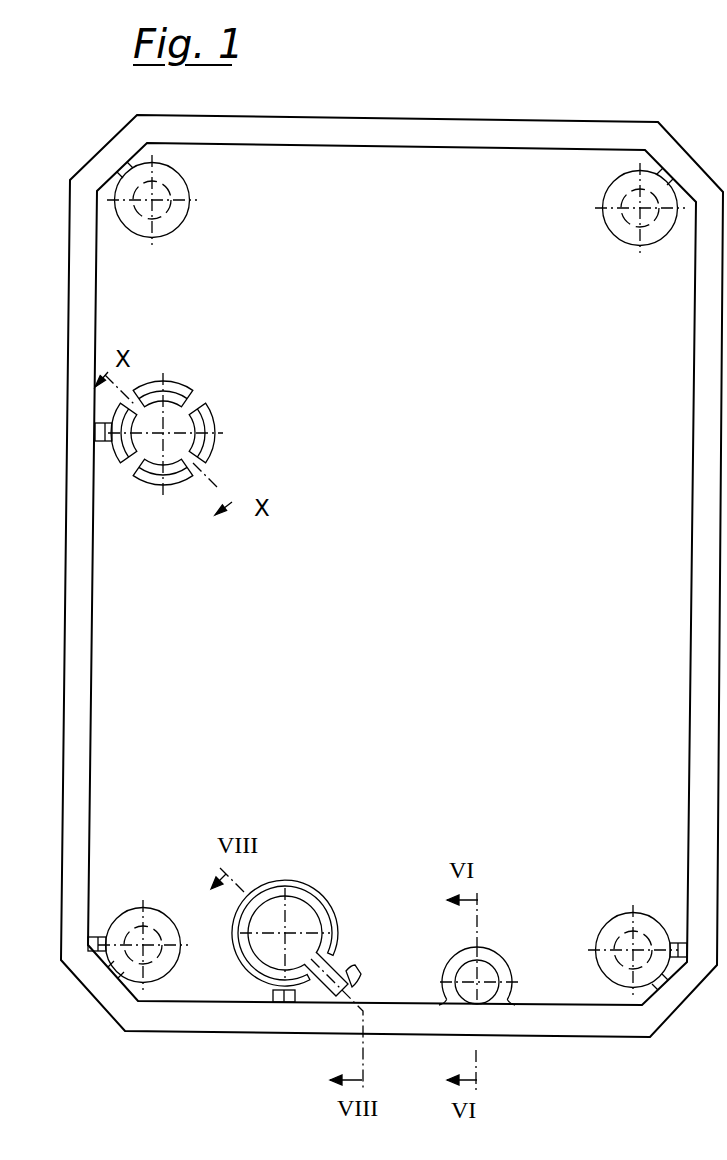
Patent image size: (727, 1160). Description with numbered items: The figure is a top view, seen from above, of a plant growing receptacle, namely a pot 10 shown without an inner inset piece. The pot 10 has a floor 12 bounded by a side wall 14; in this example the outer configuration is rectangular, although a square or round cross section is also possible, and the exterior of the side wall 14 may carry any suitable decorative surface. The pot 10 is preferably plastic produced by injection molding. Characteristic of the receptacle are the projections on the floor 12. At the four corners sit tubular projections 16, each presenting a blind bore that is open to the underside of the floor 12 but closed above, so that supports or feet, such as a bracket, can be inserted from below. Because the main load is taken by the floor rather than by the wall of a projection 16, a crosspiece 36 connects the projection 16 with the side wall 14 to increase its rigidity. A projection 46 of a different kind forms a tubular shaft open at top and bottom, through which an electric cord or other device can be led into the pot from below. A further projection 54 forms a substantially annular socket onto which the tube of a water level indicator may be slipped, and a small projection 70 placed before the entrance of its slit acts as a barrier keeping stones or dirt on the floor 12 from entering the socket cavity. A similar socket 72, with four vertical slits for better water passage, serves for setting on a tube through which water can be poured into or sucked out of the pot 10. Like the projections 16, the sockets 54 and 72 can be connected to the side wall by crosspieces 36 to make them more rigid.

The pot 10 is at (342, 113).
The floor 12 is at (409, 470).
The side wall 14 is at (77, 527).
The projections 16 is at (170, 225).
The crosspiece 36 is at (100, 936).
The projection 46 is at (502, 968).
The projection 54 is at (305, 878).
The projection 70 is at (340, 987).
The socket 72 is at (222, 422).